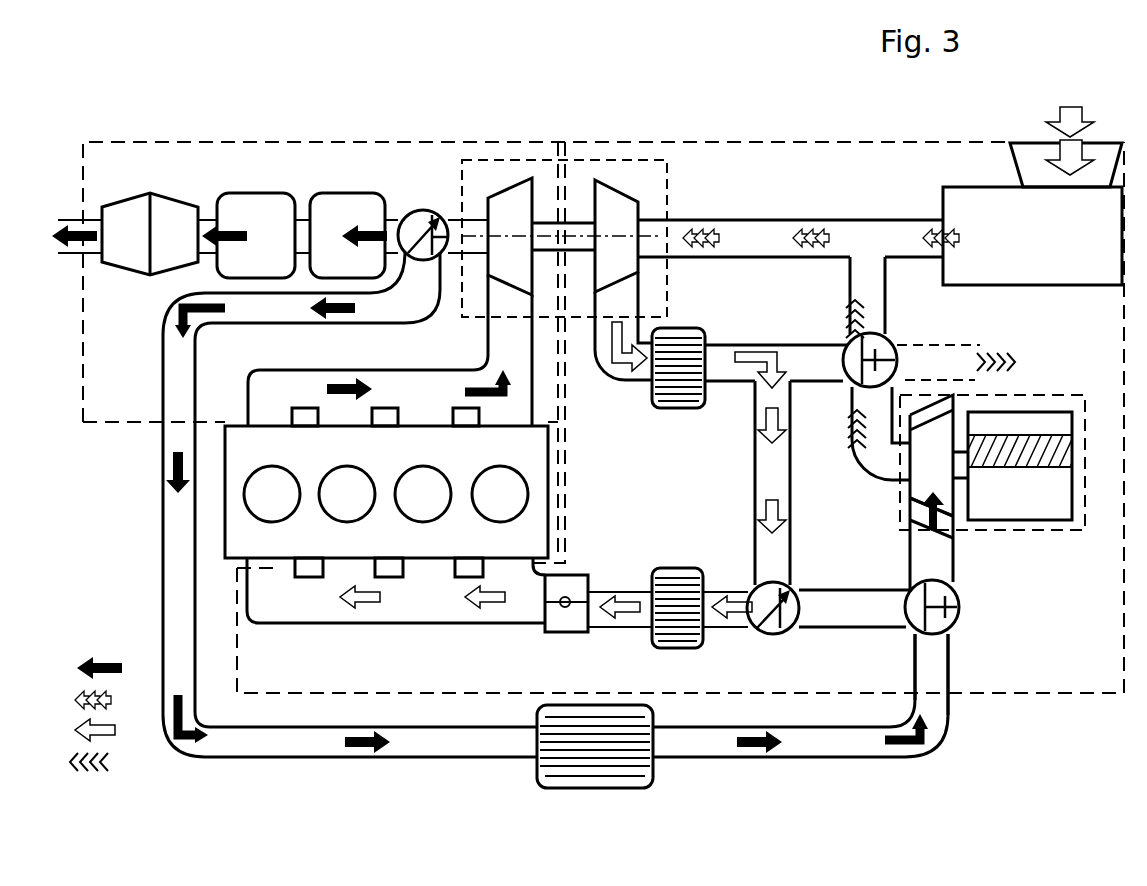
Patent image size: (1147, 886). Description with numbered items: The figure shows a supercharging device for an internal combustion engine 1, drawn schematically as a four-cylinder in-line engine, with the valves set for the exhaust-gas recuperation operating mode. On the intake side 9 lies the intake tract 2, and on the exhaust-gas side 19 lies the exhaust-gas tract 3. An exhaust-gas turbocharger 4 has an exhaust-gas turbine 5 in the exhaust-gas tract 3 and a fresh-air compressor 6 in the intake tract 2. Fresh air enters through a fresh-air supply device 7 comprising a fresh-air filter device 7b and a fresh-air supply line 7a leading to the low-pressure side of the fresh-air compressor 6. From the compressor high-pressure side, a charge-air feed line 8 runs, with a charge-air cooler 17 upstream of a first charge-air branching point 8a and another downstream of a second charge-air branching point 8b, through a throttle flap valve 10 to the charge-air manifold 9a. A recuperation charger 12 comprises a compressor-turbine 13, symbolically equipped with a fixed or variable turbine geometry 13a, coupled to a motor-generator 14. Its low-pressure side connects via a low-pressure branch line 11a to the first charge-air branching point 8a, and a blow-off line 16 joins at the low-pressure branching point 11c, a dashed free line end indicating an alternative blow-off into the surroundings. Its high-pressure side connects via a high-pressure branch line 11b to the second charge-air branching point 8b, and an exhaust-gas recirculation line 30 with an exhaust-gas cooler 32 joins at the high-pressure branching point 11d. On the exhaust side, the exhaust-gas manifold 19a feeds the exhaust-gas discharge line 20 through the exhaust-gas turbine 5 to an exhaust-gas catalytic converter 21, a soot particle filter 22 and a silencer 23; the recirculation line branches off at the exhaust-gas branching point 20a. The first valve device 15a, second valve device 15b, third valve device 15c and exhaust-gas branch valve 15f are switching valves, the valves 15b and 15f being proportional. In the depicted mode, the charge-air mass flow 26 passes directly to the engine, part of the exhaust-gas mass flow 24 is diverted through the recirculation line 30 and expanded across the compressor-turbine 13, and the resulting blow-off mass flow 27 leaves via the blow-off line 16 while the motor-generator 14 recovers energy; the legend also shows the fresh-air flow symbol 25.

The internal combustion engine 1 is at (237, 518).
The intake tract 2 is at (237, 640).
The exhaust-gas tract 3 is at (137, 422).
The exhaust-gas turbocharger 4 is at (583, 160).
The exhaust-gas turbine 5 is at (513, 205).
The fresh-air compressor 6 is at (625, 178).
The fresh-air supply device 7 is at (880, 195).
The fresh-air supply line 7a is at (785, 237).
The fresh-air filter device 7b is at (1032, 196).
The charge-air feed line 8 is at (610, 355).
The first charge-air branching point 8a is at (770, 353).
The second charge-air branching point 8b is at (750, 588).
The intake side 9 is at (417, 624).
The charge-air manifold 9a is at (395, 630).
The throttle flap valve 10 is at (557, 612).
The low-pressure branch line 11a is at (812, 367).
The high-pressure branch line 11b is at (927, 570).
The low-pressure branching point 11c is at (845, 345).
The high-pressure branching point 11d is at (958, 607).
The recuperation charger 12 is at (985, 530).
The compressor-turbine 13 is at (925, 496).
The turbine geometry 13a is at (912, 512).
The motor-generator 14 is at (1040, 505).
The first valve device 15a is at (880, 348).
The second valve device 15b is at (790, 632).
The third valve device 15c is at (955, 622).
The exhaust-gas branch valve 15f is at (405, 212).
The blow-off line 16 is at (882, 300).
The charge-air cooler 17 is at (665, 410).
The exhaust-gas side 19 is at (222, 398).
The exhaust-gas manifold 19a is at (310, 383).
The exhaust-gas discharge line 20 is at (500, 323).
The exhaust-gas branching point 20a is at (440, 210).
The exhaust-gas catalytic converter 21 is at (350, 207).
The soot particle filter 22 is at (253, 207).
The silencer 23 is at (165, 207).
The exhaust-gas mass flow 24 is at (115, 669).
The fresh air flow symbol 25 is at (114, 700).
The charge-air mass flow 26 is at (114, 730).
The blow-off mass flow 27 is at (111, 762).
The exhaust-gas recirculation line 30 is at (455, 757).
The exhaust-gas cooler 32 is at (660, 770).